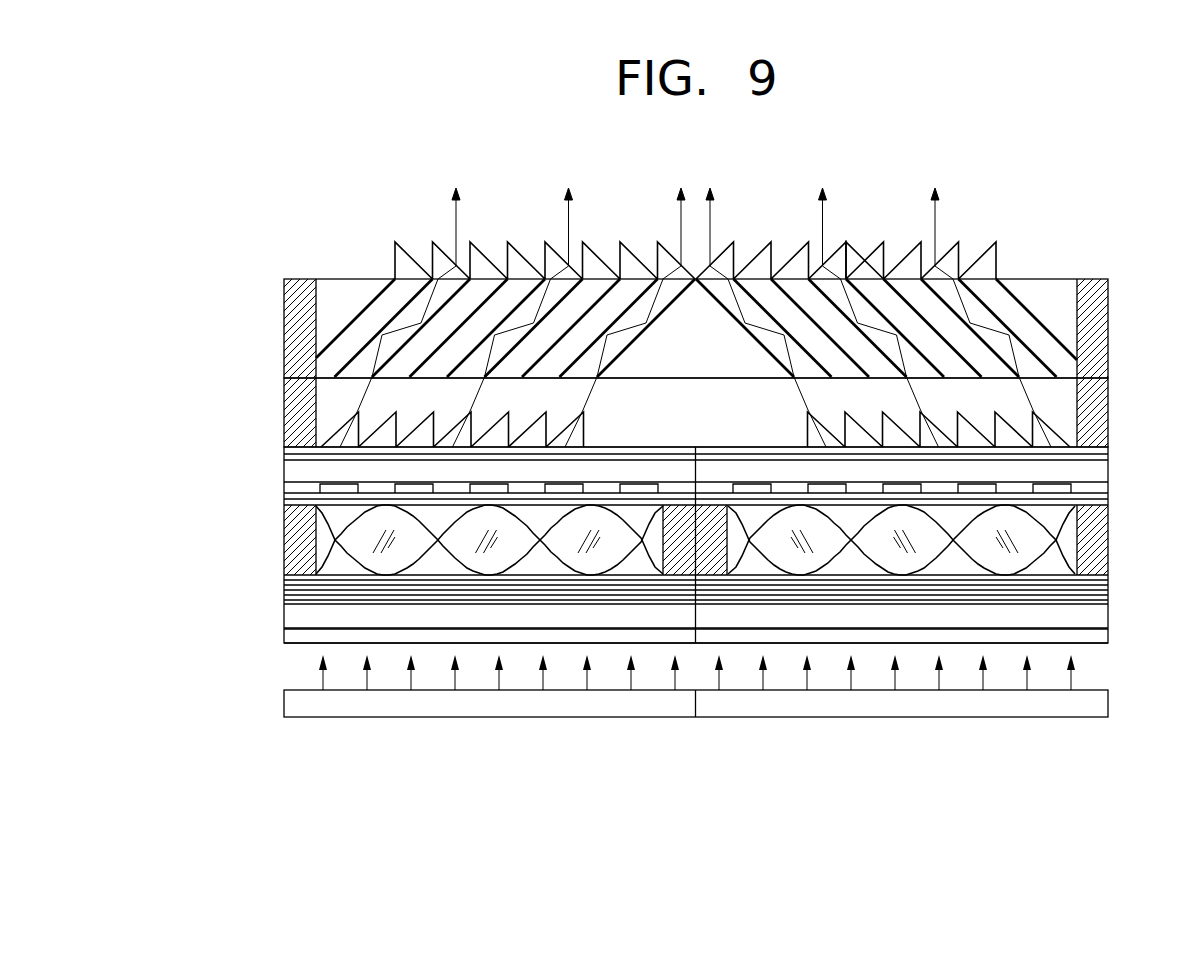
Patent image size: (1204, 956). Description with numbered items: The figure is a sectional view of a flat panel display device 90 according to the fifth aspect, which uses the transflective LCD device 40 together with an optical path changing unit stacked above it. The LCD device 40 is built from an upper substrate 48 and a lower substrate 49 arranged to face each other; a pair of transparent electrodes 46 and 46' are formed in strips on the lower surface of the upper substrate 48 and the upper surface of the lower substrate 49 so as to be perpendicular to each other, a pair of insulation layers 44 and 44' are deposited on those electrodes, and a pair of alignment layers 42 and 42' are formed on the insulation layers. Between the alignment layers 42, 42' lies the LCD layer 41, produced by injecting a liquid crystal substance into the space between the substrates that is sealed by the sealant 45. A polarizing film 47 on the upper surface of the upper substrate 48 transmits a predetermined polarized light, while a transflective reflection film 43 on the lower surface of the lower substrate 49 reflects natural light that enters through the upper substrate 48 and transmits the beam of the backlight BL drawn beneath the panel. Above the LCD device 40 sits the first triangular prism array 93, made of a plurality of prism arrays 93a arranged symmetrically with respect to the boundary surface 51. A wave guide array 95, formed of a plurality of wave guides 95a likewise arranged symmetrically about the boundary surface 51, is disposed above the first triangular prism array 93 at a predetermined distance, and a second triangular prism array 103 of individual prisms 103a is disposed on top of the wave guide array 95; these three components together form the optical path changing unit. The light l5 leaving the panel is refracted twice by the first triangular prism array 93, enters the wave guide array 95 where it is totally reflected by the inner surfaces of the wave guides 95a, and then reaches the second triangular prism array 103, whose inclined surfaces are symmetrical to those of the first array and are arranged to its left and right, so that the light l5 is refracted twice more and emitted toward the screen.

The flat panel display device 90 is at (1120, 190).
The wave guide array 95 is at (1112, 283).
The wave guide 95a is at (1025, 307).
The second triangular prism array 103 is at (388, 182).
The prism of the second triangular prism array 103a is at (862, 262).
The light l5 is at (681, 242).
The first triangular prism array 93 is at (1108, 380).
The prism array 93a is at (1062, 411).
The LCD device 40 is at (222, 455).
The boundary surface 51 is at (700, 447).
The polarizing film 47 is at (1108, 449).
The upper substrate 48 is at (1108, 465).
The insulation layer 44 is at (666, 493).
The transparent electrode 46 is at (742, 488).
The alignment layer 42 is at (724, 506).
The sealant 45 is at (290, 546).
The LCD layer 41 is at (365, 530).
The alignment layer 42' is at (727, 568).
The insulation layer 44' is at (666, 591).
The transparent electrode 46' is at (727, 593).
The lower substrate 49 is at (1108, 615).
The transflective reflection film 43 is at (1108, 636).
The backlight BL is at (1108, 703).